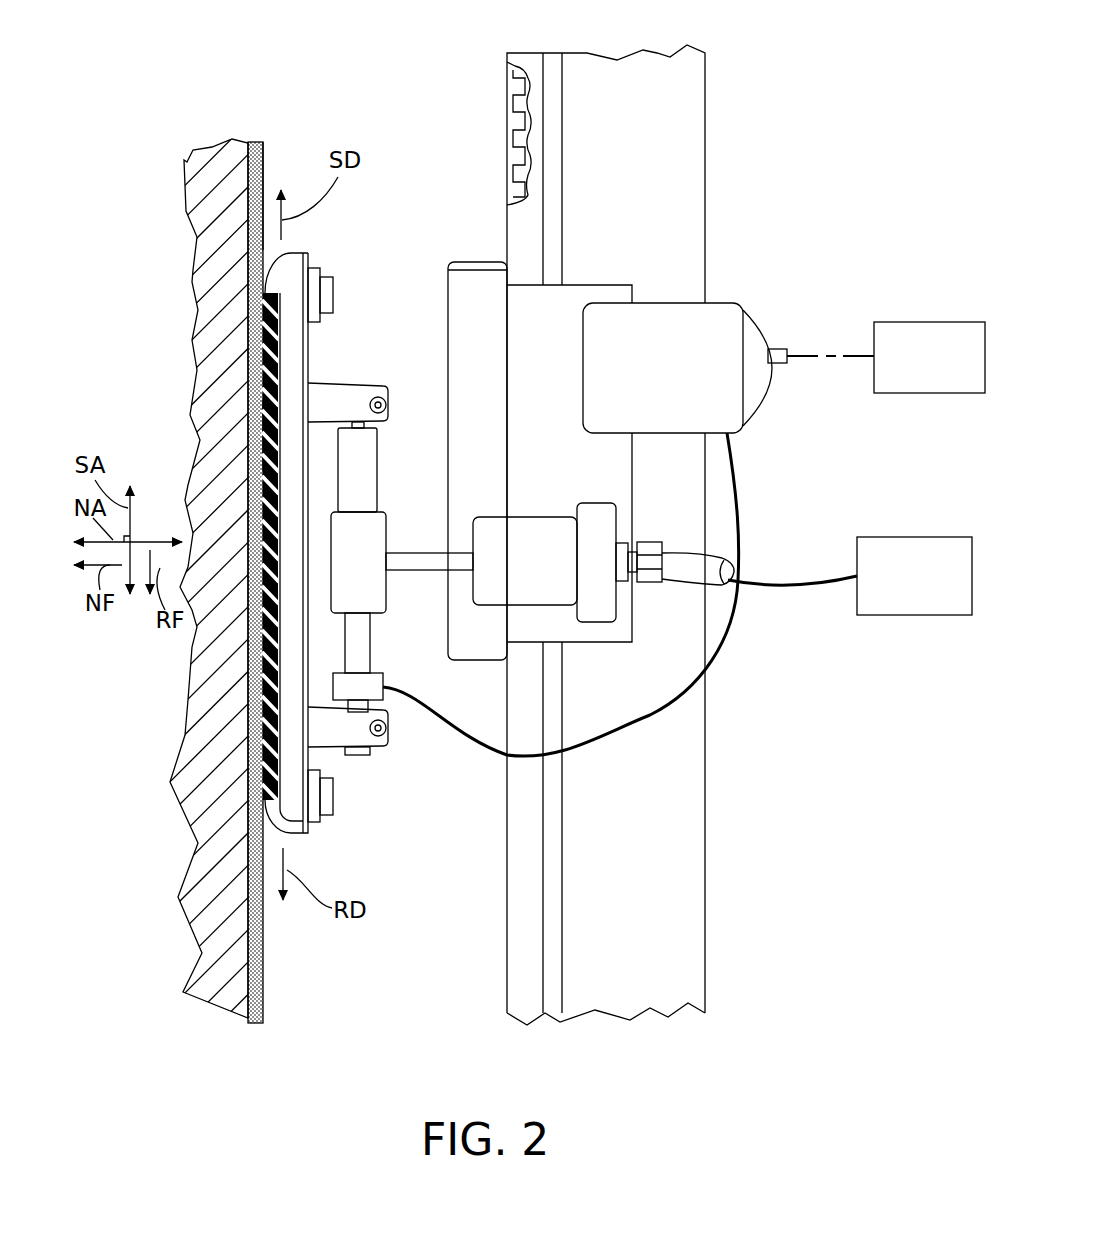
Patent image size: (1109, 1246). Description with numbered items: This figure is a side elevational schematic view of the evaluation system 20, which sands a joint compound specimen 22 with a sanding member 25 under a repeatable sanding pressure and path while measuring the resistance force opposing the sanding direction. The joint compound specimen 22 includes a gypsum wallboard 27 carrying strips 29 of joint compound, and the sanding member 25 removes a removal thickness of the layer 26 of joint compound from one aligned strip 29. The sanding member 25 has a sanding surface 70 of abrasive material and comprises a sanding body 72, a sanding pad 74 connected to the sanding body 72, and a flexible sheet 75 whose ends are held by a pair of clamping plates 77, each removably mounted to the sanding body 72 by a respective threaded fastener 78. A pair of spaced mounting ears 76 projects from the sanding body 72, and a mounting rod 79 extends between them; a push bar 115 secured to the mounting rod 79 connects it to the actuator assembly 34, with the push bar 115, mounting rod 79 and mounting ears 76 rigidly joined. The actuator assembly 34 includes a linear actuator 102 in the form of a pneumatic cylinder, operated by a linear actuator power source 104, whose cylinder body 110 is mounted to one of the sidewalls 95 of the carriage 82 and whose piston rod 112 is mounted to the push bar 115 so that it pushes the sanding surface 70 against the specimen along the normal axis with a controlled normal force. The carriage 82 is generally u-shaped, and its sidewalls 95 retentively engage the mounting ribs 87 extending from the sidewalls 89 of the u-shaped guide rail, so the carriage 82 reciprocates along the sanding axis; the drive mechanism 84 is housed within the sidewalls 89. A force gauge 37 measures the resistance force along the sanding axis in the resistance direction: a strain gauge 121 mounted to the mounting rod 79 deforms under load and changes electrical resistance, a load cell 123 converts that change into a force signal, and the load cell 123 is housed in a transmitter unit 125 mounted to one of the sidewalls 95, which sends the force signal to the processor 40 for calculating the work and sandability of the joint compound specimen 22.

The evaluation system 20 is at (736, 92).
The joint compound specimen 22 is at (205, 185).
The sanding member 25 is at (293, 357).
The layer of joint compound 26 is at (257, 258).
The gypsum wallboard 27 is at (207, 368).
The strips of joint compound 29 is at (266, 176).
The actuator assembly 34 is at (626, 607).
The force gauge 37 is at (387, 693).
The processor 40 is at (904, 322).
The sanding surface 70 is at (256, 436).
The sanding body 72 is at (297, 753).
The sanding pad 74 is at (270, 337).
The flexible sheet 75 is at (260, 388).
The mounting ears 76 is at (388, 395).
The clamping plates 77 is at (313, 272).
The threaded fastener 78 is at (325, 292).
The mounting rod 79 is at (370, 648).
The carriage 82 is at (479, 283).
The drive mechanism 84 is at (510, 115).
The mounting ribs 87 is at (550, 128).
The sidewalls of the guide rail 89 is at (582, 85).
The sidewalls of the carriage 95 is at (565, 315).
The linear actuator 102 is at (525, 515).
The linear actuator power source 104 is at (907, 615).
The cylinder body 110 is at (552, 530).
The piston rod 112 is at (423, 552).
The push bar 115 is at (387, 592).
The strain gauge 121 is at (393, 697).
The load cell 123 is at (660, 320).
The transmitter unit 125 is at (640, 323).